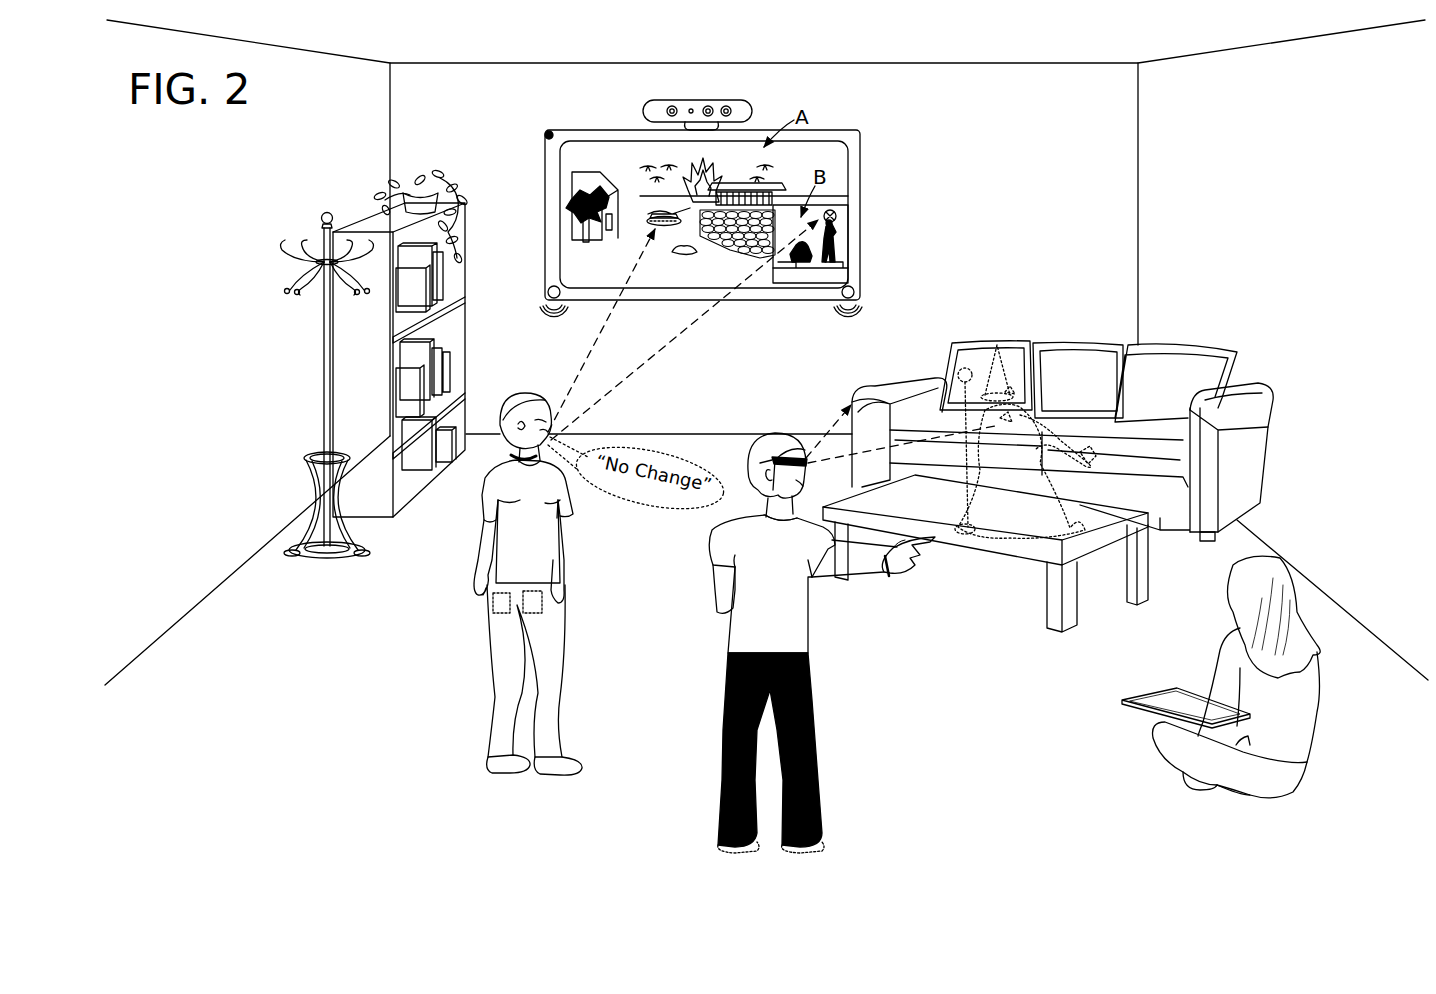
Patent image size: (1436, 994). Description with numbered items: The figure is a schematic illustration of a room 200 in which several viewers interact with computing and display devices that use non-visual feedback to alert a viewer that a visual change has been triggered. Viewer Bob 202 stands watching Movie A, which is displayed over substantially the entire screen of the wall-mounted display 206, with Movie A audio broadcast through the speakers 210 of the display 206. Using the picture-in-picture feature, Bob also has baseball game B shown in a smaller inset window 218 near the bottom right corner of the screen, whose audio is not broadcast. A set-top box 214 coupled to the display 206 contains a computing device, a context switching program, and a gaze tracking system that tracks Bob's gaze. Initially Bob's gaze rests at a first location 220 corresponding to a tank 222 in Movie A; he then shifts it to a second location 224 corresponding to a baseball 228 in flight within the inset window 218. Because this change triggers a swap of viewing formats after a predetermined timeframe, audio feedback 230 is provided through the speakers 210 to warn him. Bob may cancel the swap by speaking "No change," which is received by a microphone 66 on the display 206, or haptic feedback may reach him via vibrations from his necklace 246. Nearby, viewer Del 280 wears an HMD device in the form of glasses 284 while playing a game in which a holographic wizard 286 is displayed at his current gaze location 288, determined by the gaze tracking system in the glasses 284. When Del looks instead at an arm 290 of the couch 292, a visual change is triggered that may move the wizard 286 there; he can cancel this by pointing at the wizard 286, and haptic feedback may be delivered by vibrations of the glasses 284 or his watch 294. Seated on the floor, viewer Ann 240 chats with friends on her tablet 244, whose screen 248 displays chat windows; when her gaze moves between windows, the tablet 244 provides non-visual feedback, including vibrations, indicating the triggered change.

The room 200 is at (944, 62).
The wall-mounted display 206 is at (585, 130).
The microphone 66 is at (549, 132).
The set-top box 214 is at (747, 102).
The speakers 210 is at (551, 287).
The audio feedback 230 is at (550, 318).
The first location 220 is at (651, 228).
The tank 222 is at (661, 233).
The inset window 218 is at (823, 212).
The baseball 228 is at (836, 213).
The second location 224 is at (838, 226).
The viewer Bob 202 is at (479, 549).
The necklace 246 is at (512, 458).
The viewer Del 280 is at (725, 721).
The HMD glasses 284 is at (803, 455).
The watch 294 is at (893, 577).
The arm of the couch 290 is at (851, 402).
The current gaze location 288 is at (1004, 423).
The couch 292 is at (951, 346).
The holographic wizard 286 is at (1025, 441).
The viewer Ann 240 is at (1323, 680).
The screen 248 is at (1136, 700).
The tablet 244 is at (1126, 705).